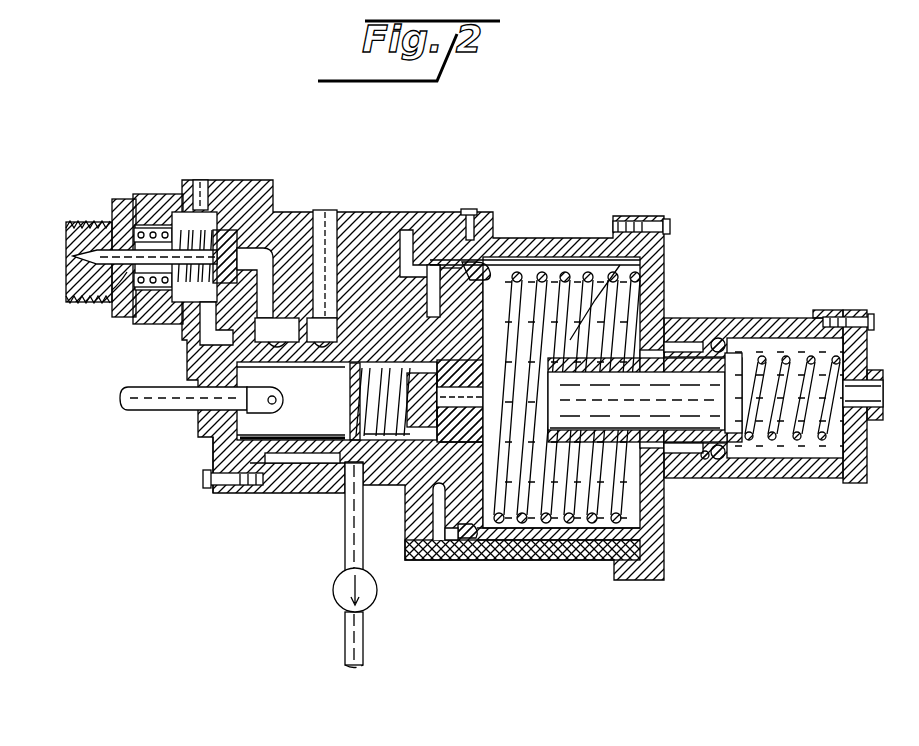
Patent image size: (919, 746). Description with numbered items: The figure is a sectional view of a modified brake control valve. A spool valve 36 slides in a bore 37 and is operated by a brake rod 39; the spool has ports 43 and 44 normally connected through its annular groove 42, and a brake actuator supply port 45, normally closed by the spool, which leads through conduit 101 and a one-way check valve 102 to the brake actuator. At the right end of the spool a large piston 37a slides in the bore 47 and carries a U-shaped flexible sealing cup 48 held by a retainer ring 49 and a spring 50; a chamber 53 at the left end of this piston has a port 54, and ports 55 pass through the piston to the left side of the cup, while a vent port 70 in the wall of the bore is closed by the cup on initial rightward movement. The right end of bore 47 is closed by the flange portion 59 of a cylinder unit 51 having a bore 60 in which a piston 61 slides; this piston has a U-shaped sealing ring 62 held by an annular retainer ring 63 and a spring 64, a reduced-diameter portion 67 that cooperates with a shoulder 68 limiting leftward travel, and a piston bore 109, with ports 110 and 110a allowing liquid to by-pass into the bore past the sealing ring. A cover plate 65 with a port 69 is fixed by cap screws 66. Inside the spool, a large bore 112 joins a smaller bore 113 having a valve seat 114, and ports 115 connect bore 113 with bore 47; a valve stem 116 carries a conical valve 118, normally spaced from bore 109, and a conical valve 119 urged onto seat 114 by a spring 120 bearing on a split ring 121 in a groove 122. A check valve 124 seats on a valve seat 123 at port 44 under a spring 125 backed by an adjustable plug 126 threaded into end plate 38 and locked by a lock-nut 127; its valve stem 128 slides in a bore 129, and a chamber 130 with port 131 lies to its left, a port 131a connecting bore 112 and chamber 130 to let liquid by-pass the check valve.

The spool valve 36 is at (402, 462).
The bore 37 is at (294, 466).
The large piston 37a is at (445, 258).
The end plate 38 is at (214, 446).
The brake rod 39 is at (125, 412).
The annular groove 42 is at (260, 486).
The port 43 is at (350, 372).
The port 44 is at (320, 364).
The brake actuator supply port 45 is at (343, 465).
The bore 47 is at (535, 262).
The U-shaped flexible sealing cup 48 is at (468, 212).
The retainer ring 49 is at (490, 268).
The spring 50 is at (590, 278).
The cylinder unit 51 is at (687, 259).
The chamber 53 is at (458, 535).
The port 54 is at (405, 255).
The ports 55 is at (455, 540).
The flange portion 59 is at (650, 216).
The bore 60 is at (762, 322).
The piston 61 is at (686, 455).
The U-shaped sealing ring 62 is at (720, 458).
The annular retainer ring 63 is at (740, 440).
The spring 64 is at (862, 440).
The cover plate 65 is at (838, 312).
The cap screws 66 is at (872, 316).
The portion of reduced diameter 67 is at (645, 300).
The shoulder 68 is at (668, 340).
The port 69 is at (884, 392).
The vent port 70 is at (486, 266).
The conduit 101 is at (348, 548).
The one-way check valve 102 is at (333, 590).
The piston bore 109 is at (615, 430).
The port 110 is at (712, 342).
The port 110a is at (700, 460).
The large bore 112 is at (240, 440).
The smaller bore 113 is at (452, 350).
The valve seat 114 is at (440, 425).
The ports 115 is at (548, 426).
The valve stem 116 is at (447, 405).
The conical valve 118 is at (552, 398).
The conical valve 119 is at (420, 340).
The spring 120 is at (328, 345).
The split ring 121 is at (366, 400).
The groove 122 is at (350, 434).
The valve seat 123 is at (240, 240).
The valve 124 is at (225, 238).
The spring 125 is at (160, 225).
The adjustable plug 126 is at (92, 222).
The lock-nut 127 is at (118, 200).
The valve stem 128 is at (115, 290).
The bore 129 is at (73, 256).
The chamber 130 is at (183, 225).
The port 131 is at (204, 180).
The port 131a is at (197, 350).